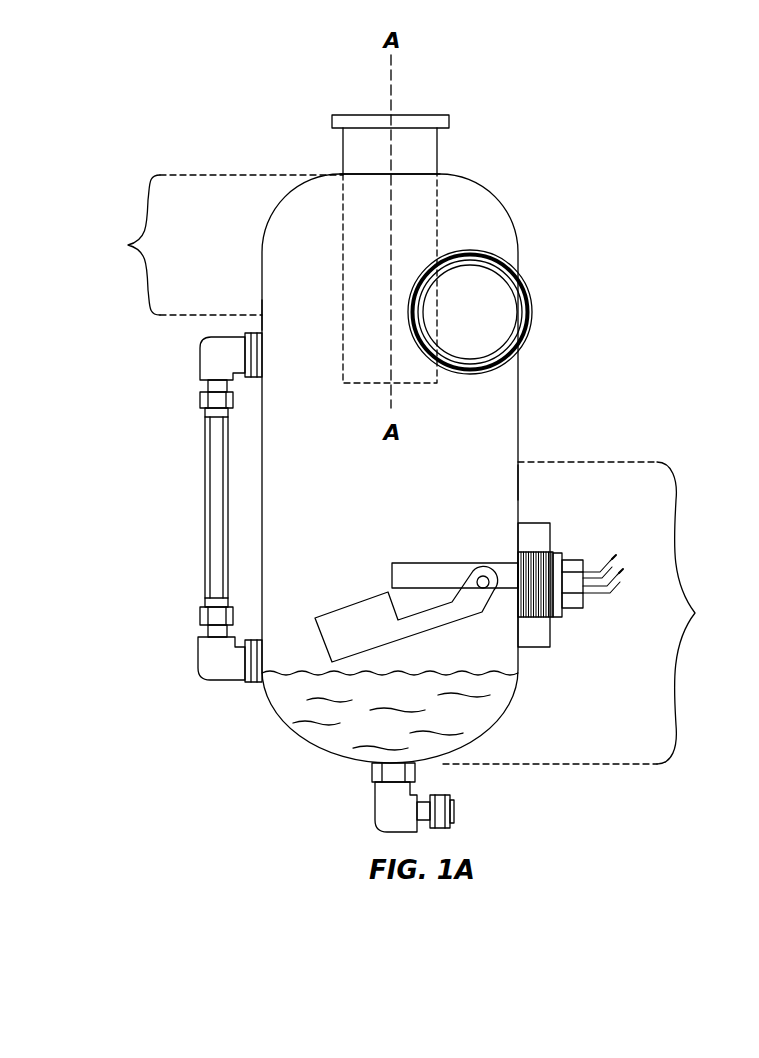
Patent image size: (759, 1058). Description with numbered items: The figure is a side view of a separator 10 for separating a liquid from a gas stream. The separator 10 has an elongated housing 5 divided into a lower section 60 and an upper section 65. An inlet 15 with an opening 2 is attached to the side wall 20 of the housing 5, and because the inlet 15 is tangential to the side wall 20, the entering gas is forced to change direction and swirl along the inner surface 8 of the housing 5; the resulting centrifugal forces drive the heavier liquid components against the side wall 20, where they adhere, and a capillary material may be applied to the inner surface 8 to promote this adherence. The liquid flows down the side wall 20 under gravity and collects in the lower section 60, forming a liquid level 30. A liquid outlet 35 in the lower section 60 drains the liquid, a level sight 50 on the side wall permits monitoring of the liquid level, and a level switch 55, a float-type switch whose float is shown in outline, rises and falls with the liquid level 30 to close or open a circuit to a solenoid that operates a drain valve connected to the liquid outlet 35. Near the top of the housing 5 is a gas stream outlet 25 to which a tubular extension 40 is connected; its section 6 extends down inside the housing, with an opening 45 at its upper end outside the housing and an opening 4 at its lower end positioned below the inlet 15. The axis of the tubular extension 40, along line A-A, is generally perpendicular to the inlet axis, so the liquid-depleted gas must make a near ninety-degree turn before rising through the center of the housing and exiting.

The opening 2 is at (462, 324).
The opening 4 is at (417, 393).
The elongated housing 5 is at (262, 297).
The section 6 is at (422, 236).
The inner surface 8 is at (270, 316).
The separator 10 is at (626, 424).
The inlet 15 is at (500, 312).
The side wall 20 is at (520, 476).
The gas stream outlet 25 is at (438, 174).
The liquid level 30 is at (438, 672).
The liquid outlet 35 is at (455, 812).
The tubular extension 40 is at (360, 163).
The opening 45 is at (358, 110).
The level sight 50 is at (205, 525).
The level switch 55 is at (569, 634).
The lower section 60 is at (587, 613).
The upper section 65 is at (218, 245).